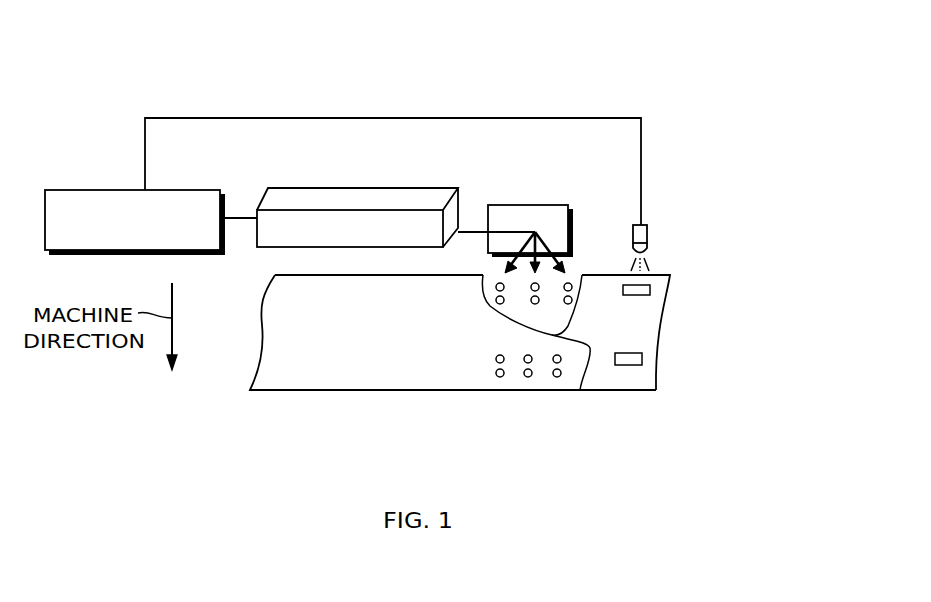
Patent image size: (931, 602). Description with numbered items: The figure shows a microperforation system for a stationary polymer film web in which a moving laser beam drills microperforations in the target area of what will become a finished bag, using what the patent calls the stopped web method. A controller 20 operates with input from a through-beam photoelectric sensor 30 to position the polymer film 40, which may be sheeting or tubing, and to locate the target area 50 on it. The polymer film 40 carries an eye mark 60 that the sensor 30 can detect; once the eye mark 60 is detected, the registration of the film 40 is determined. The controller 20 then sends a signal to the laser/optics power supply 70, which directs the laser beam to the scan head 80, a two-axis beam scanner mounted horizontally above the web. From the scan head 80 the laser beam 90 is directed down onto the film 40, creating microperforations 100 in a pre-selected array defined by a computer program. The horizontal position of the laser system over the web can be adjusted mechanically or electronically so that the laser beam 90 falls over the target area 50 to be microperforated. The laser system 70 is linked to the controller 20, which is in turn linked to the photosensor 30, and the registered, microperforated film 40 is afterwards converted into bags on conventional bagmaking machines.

The controller 20 is at (143, 246).
The through-beam photoelectric sensor 30 is at (648, 238).
The polymer film 40 is at (422, 390).
The target area 50 is at (580, 390).
The eye mark 60 is at (645, 292).
The laser/optics power supply 70 is at (395, 230).
The scan head 80 is at (553, 212).
The laser beam 90 is at (540, 233).
The microperforations 100 is at (489, 300).